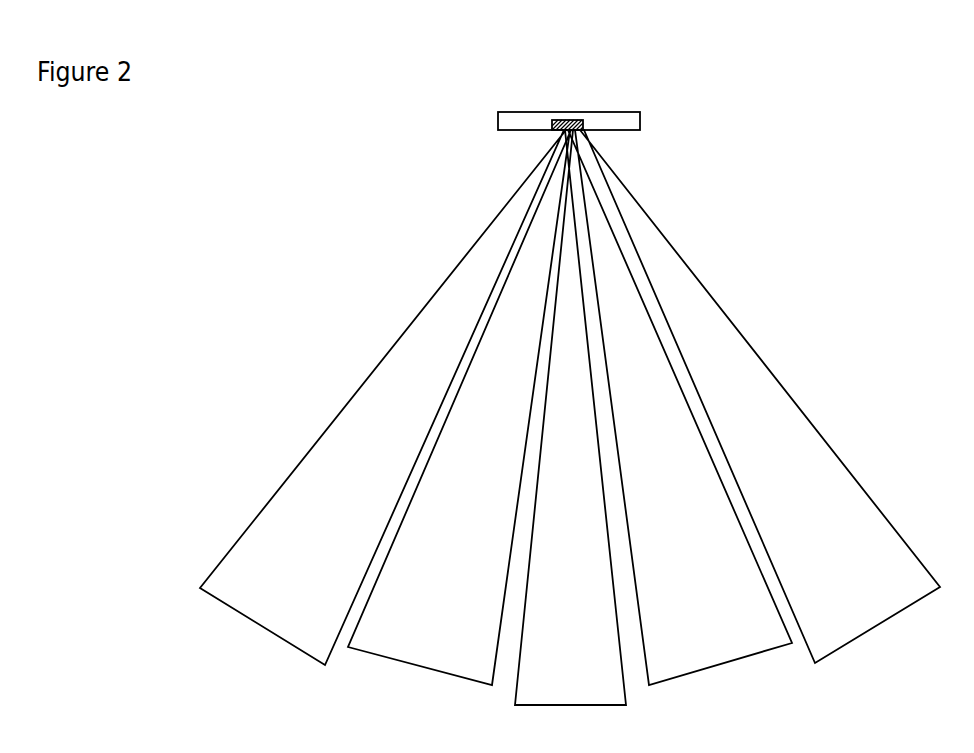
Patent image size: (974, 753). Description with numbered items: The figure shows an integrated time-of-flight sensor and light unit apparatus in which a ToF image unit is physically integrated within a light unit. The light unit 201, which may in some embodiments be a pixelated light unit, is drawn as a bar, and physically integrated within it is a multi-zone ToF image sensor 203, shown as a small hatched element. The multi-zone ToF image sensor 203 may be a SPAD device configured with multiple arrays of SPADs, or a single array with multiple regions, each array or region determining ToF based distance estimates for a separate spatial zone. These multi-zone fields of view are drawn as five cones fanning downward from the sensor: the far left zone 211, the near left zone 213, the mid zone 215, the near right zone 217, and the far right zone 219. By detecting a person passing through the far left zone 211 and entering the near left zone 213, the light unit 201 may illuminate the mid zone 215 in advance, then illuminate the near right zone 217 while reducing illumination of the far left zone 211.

The light unit 201 is at (518, 112).
The multi-zone ToF image sensor 203 is at (572, 120).
The far left zone 211 is at (383, 397).
The near left zone 213 is at (459, 407).
The mid zone 215 is at (570, 417).
The near right zone 217 is at (680, 407).
The far right zone 219 is at (760, 396).